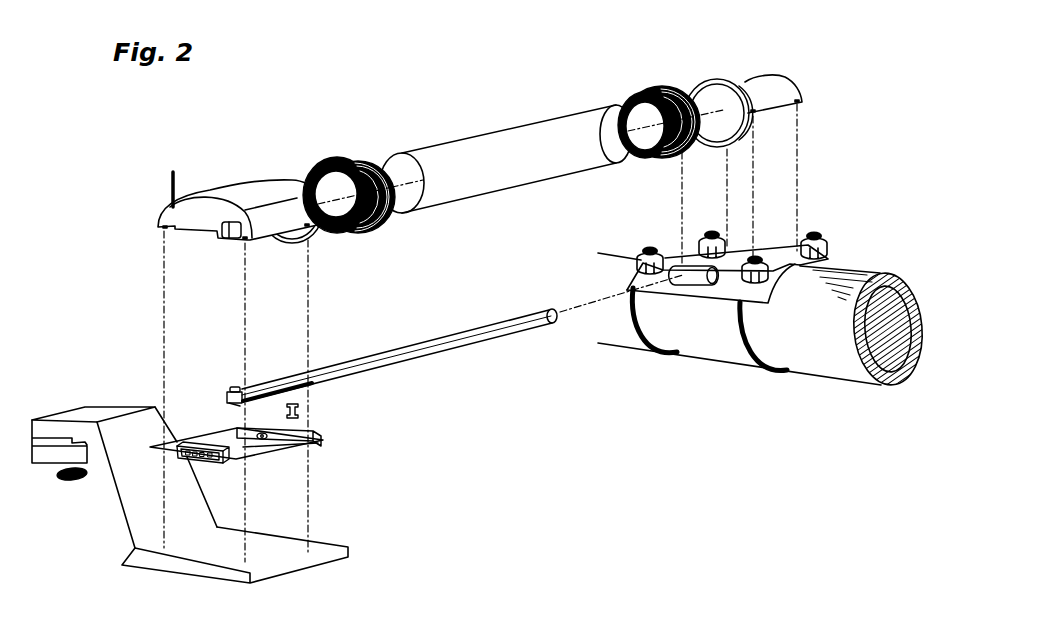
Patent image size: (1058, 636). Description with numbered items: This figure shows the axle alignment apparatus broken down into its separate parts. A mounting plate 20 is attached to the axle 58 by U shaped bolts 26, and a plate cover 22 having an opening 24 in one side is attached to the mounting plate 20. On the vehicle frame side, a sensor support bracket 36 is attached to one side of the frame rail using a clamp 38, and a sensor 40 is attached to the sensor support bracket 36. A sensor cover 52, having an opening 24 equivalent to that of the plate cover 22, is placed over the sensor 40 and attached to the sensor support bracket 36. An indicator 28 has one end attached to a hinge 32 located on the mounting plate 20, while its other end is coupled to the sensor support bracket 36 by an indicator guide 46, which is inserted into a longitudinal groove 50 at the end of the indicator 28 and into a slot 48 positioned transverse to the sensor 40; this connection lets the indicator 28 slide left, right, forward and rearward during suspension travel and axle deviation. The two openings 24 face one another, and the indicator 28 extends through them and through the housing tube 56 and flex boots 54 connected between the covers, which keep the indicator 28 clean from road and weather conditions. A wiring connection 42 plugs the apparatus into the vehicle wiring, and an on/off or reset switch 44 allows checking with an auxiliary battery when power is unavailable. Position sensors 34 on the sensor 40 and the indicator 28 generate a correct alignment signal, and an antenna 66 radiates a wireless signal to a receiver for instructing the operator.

The mounting plate 20 is at (830, 260).
The plate cover 22 is at (747, 82).
The opening 24 is at (288, 243).
The U shaped bolts 26 is at (757, 372).
The indicator 28 is at (413, 352).
The hinge 32 is at (687, 272).
The position sensor 34 is at (230, 388).
The sensor support bracket 36 is at (110, 537).
The clamp 38 is at (52, 460).
The sensor 40 is at (303, 450).
The wiring connection 42 is at (223, 465).
The on/off or reset switch 44 is at (230, 238).
The indicator guide 46 is at (303, 412).
The slot 48 is at (320, 435).
The longitudinal groove 50 is at (315, 382).
The sensor cover 52 is at (262, 188).
The flex boots 54 is at (328, 160).
The housing tube 56 is at (540, 130).
The axle 58 is at (838, 375).
The antenna 66 is at (174, 180).